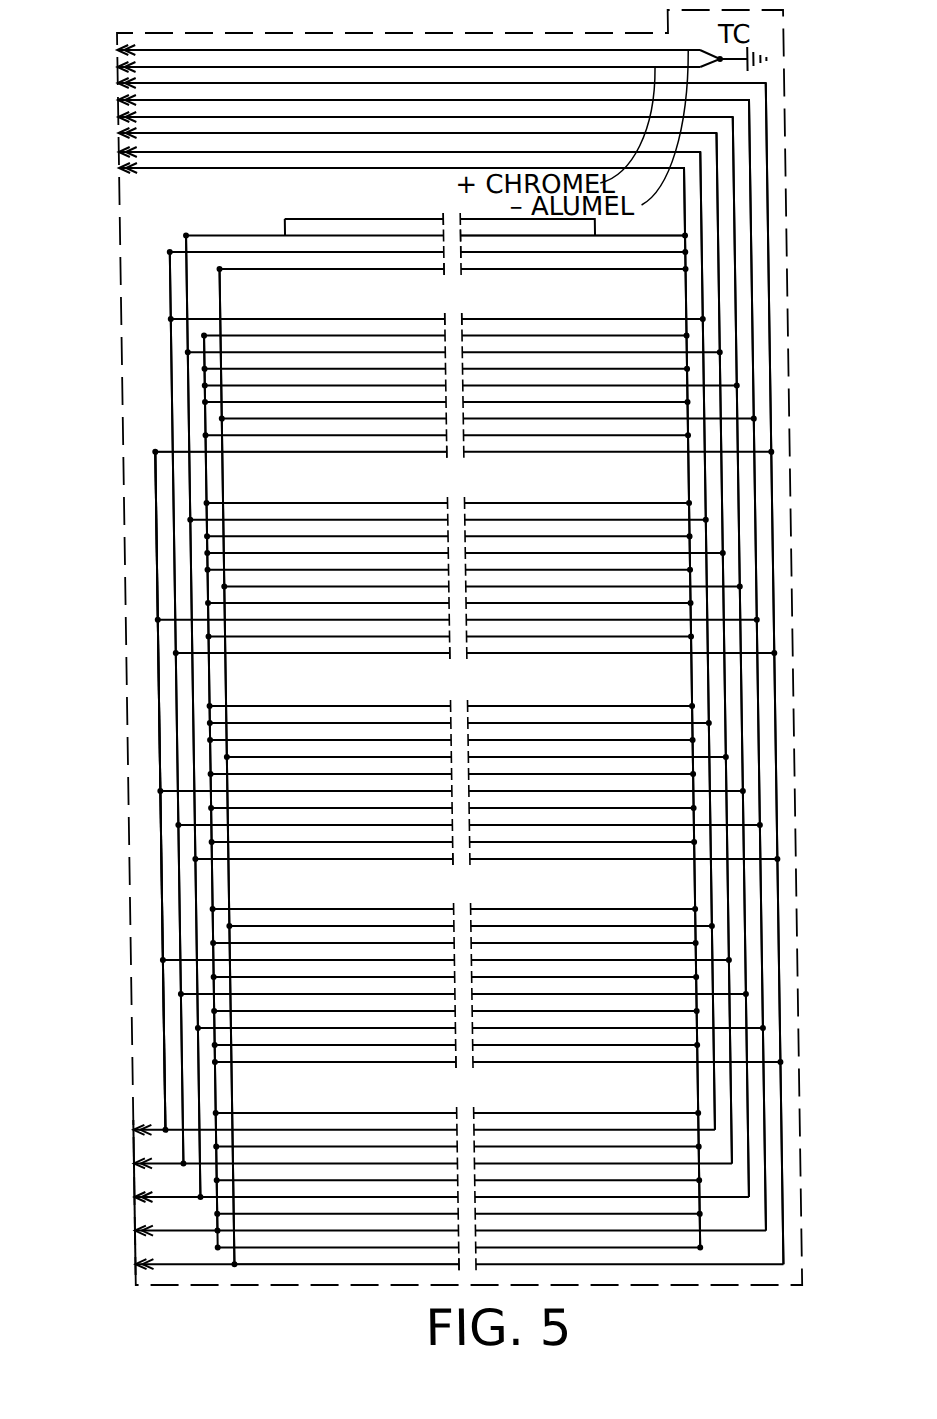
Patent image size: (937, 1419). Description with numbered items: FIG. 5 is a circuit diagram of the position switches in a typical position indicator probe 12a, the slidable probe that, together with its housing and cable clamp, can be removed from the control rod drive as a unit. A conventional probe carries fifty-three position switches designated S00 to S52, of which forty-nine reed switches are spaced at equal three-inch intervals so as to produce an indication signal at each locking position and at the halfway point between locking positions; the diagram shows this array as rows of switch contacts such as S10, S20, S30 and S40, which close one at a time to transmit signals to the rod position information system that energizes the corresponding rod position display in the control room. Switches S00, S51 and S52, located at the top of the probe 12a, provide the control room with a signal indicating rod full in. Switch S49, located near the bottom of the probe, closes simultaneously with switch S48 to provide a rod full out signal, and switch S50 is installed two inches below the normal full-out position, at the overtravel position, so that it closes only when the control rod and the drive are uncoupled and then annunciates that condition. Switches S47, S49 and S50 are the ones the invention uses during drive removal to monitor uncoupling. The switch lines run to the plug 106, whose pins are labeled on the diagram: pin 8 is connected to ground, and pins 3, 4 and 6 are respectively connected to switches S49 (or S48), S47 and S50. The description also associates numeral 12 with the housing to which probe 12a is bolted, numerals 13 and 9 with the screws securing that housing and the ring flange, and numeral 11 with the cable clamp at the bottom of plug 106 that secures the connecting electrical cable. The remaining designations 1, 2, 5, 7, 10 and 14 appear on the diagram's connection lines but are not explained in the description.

The chromel thermocouple lead 1 is at (127, 66).
The alumel thermocouple lead 2 is at (127, 49).
The pin 3 is at (127, 1264).
The pin 4 is at (127, 1231).
The column select line 5 is at (127, 1197).
The pin 6 is at (127, 1164).
The column select line 7 is at (127, 1130).
The pin 8 is at (127, 169).
The screws 9 is at (127, 152).
The row select line 10 is at (127, 133).
The cable clamp 11 is at (127, 117).
The housing 12 is at (127, 100).
The screws 13 is at (127, 84).
The bus line 14 is at (130, 1128).
The plug 106 is at (126, 1125).
The position indicator probe 12a is at (120, 898).
The position switch S00 is at (448, 1265).
The position switch S10 is at (446, 1063).
The position switch S20 is at (447, 860).
The position switch S30 is at (450, 656).
The position switch S40 is at (450, 455).
The position switch S47 is at (469, 333).
The position switch S48 is at (450, 318).
The position switch S49 is at (450, 274).
The position switch S50 is at (469, 255).
The position switch S51 is at (469, 236).
The position switch S52 is at (450, 212).